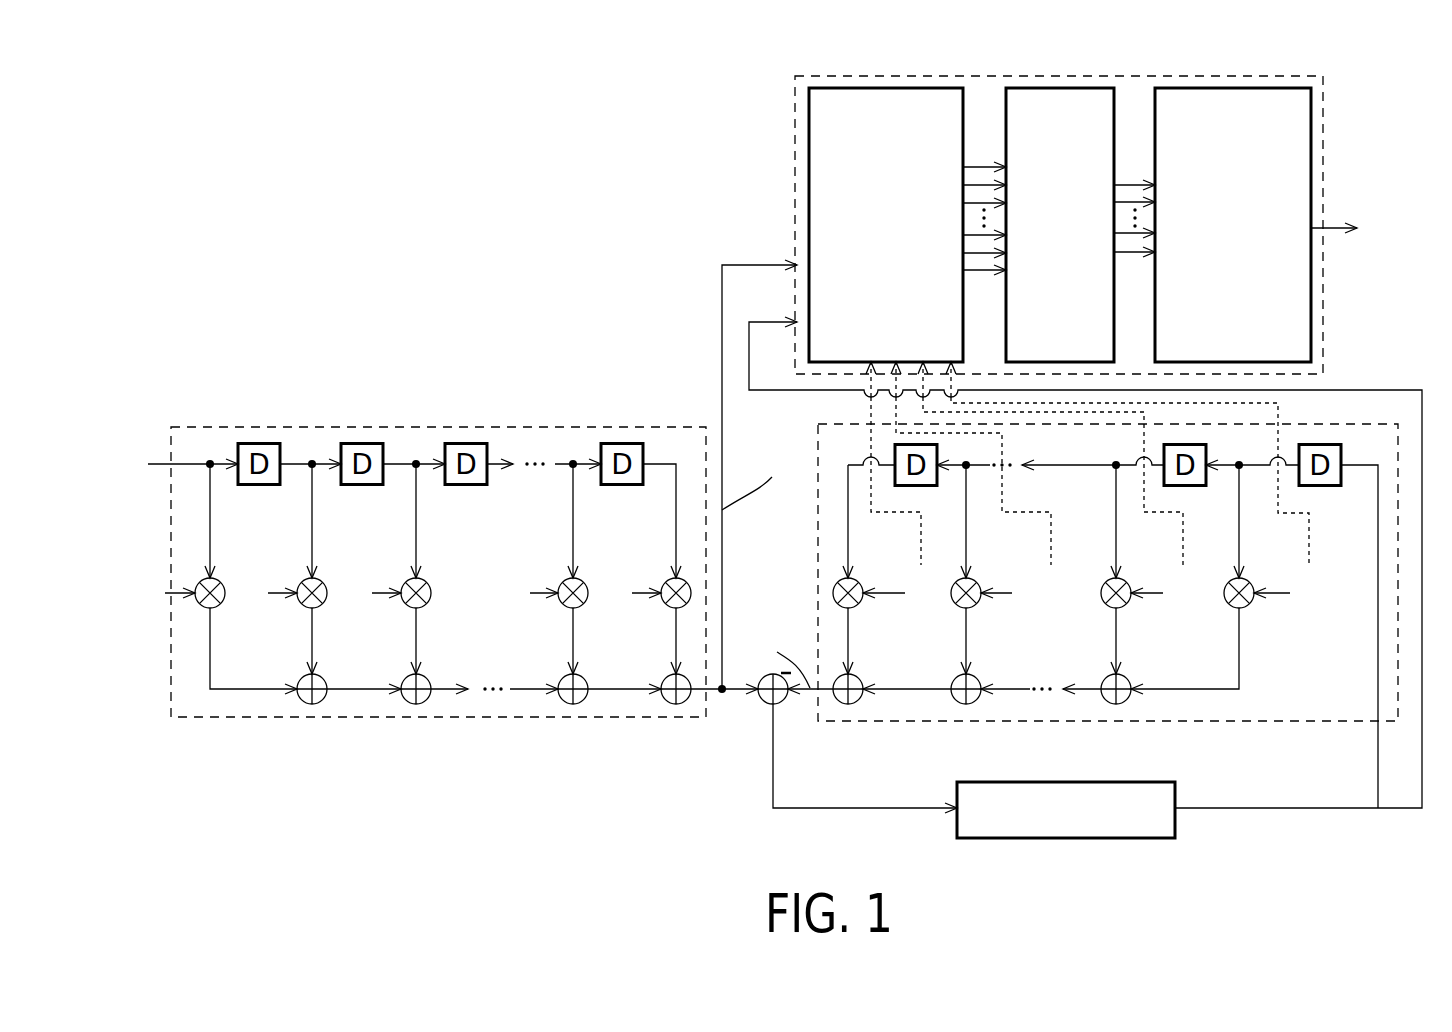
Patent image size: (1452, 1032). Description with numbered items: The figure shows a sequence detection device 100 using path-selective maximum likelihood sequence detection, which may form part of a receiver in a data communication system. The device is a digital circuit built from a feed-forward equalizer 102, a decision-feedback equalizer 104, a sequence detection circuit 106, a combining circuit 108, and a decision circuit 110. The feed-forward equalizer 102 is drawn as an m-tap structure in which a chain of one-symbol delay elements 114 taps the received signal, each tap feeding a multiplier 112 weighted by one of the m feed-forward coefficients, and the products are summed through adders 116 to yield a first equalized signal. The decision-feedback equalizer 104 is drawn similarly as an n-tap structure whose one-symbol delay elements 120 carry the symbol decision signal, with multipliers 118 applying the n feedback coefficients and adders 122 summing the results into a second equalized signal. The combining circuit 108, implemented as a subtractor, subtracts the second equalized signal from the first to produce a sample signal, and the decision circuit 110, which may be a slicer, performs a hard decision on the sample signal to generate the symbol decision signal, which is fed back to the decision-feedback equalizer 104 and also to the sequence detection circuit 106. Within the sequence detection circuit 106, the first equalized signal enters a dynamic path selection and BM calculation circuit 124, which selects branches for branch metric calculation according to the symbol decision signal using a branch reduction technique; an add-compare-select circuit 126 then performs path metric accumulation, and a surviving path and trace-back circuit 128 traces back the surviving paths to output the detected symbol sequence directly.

The sequence detection device 100 is at (276, 203).
The feed-forward equalizer 102 is at (430, 427).
The decision-feedback equalizer 104 is at (1180, 723).
The sequence detection circuit 106 is at (1152, 76).
The combining circuit 108 is at (760, 707).
The decision circuit 110 is at (977, 782).
The multiplier 112 is at (222, 608).
The one-symbol delay element 114 is at (263, 486).
The adder 116 is at (302, 703).
The multiplier 118 is at (1247, 610).
The one-symbol delay element 120 is at (1330, 487).
The adder 122 is at (1105, 705).
The dynamic path selection and BM calculation circuit 124 is at (898, 88).
The add-compare-select circuit 126 is at (1060, 88).
The surviving path and trace-back circuit 128 is at (1208, 88).